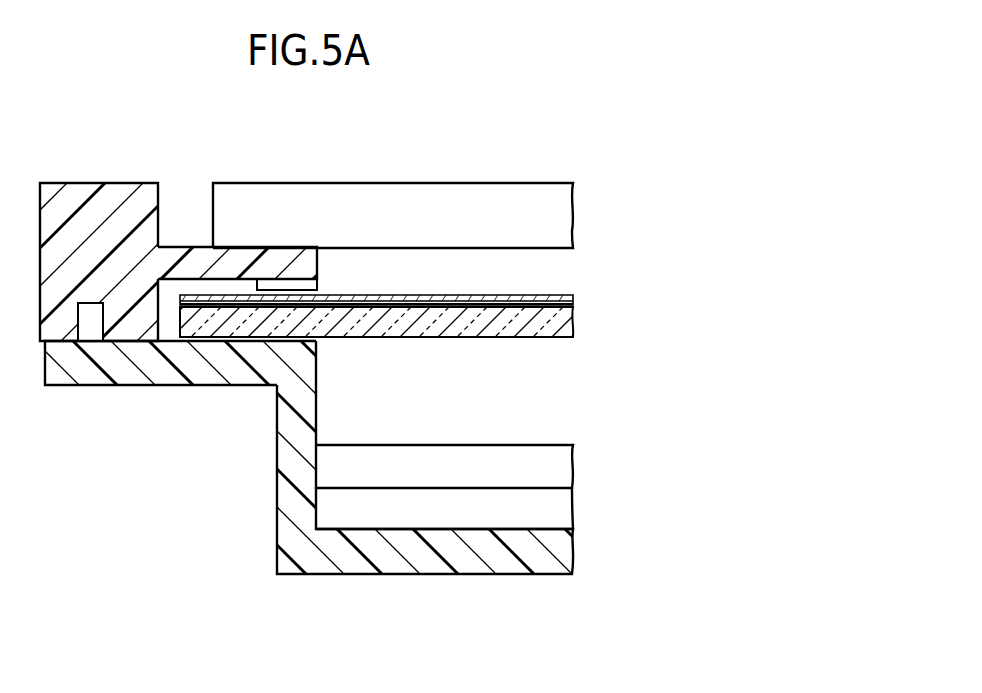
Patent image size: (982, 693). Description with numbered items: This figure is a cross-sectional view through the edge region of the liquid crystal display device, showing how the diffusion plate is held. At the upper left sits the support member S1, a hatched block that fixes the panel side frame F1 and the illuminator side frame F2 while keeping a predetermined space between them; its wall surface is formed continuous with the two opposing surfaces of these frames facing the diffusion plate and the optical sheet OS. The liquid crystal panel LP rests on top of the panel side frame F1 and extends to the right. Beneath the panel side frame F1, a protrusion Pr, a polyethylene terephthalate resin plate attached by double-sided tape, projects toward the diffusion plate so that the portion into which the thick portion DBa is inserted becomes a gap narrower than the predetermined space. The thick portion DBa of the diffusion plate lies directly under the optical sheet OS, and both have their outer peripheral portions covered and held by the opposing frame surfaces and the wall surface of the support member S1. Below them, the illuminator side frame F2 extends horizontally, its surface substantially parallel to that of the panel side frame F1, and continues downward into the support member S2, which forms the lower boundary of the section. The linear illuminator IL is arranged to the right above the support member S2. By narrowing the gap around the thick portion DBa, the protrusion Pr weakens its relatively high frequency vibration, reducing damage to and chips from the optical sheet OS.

The support member S1 is at (100, 183).
The panel side frame F1 is at (192, 247).
The protrusion Pr is at (287, 285).
The liquid crystal panel LP is at (504, 200).
The optical sheet OS is at (550, 302).
The thick portion DBa is at (550, 330).
The linear illuminator IL is at (548, 447).
The illuminator side frame F2 is at (165, 365).
The support member S2 is at (390, 575).